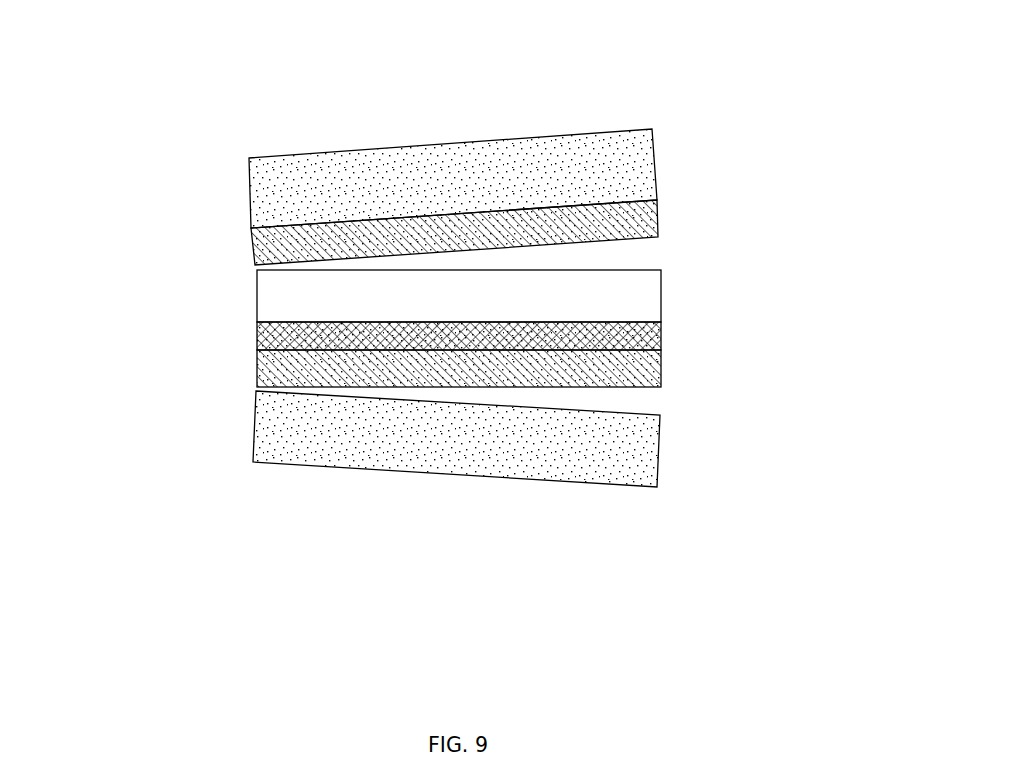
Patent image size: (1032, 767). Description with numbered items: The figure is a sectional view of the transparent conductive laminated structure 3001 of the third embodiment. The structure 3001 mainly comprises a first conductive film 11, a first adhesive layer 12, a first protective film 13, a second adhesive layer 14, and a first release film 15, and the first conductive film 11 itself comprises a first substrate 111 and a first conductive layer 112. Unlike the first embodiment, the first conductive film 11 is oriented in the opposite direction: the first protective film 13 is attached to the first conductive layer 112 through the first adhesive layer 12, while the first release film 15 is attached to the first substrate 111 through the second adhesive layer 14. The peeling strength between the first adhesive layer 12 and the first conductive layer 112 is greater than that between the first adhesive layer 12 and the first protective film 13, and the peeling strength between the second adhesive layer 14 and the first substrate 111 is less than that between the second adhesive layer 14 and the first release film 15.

The transparent conductive laminated structure 3001 is at (723, 43).
The first release film 15 is at (653, 152).
The second adhesive layer 14 is at (655, 215).
The first conductive film 11 is at (475, 309).
The first substrate 111 is at (652, 292).
The first conductive layer 112 is at (662, 329).
The first adhesive layer 12 is at (662, 368).
The first protective film 13 is at (653, 442).